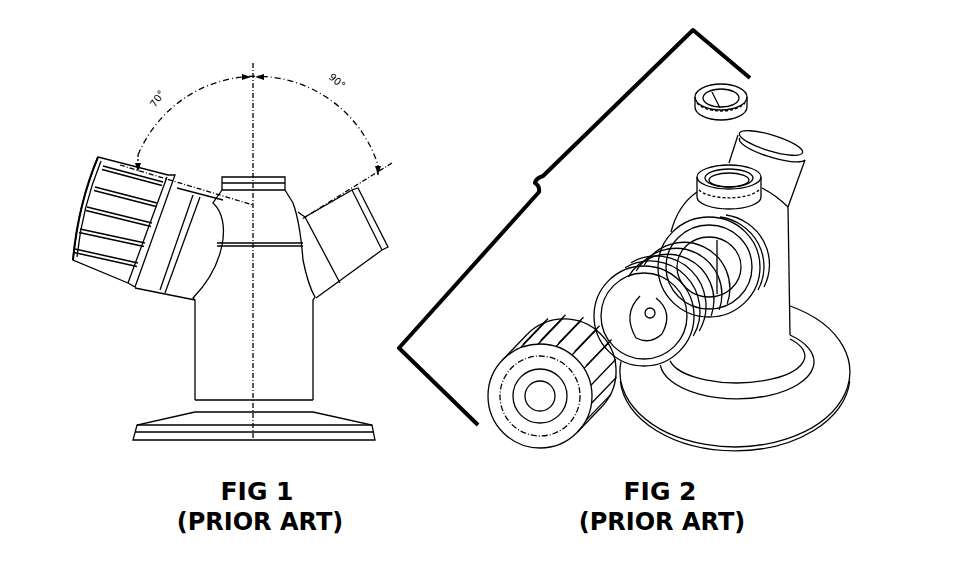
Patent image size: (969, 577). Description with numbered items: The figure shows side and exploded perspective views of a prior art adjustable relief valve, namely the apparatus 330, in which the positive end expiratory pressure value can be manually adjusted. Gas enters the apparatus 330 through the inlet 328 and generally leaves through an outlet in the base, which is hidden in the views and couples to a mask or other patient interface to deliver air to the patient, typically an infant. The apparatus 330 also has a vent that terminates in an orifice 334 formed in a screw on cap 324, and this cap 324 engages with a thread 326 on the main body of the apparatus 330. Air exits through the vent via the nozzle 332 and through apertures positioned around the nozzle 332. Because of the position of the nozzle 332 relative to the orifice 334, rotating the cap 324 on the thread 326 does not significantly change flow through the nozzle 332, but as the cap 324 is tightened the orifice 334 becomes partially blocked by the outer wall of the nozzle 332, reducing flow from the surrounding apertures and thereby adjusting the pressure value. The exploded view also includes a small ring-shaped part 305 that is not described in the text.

In FIG. 2, the sealing ring 305 is at (697, 102).
In FIG. 1, the screw on cap 324 is at (112, 253).
In FIG. 2, the screw on cap 324 is at (545, 340).
In FIG. 2, the thread 326 is at (653, 283).
In FIG. 1, the inlet 328 is at (380, 222).
In FIG. 1, the apparatus 330 is at (320, 345).
In FIG. 2, the apparatus 330 is at (787, 283).
In FIG. 1, the nozzle 332 is at (92, 172).
In FIG. 2, the nozzle 332 is at (615, 292).
In FIG. 1, the orifice 334 is at (78, 212).